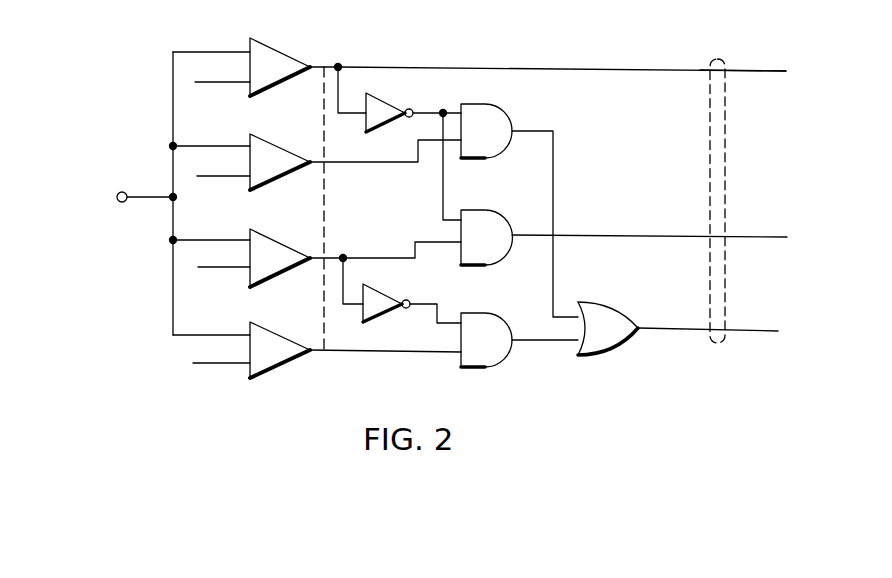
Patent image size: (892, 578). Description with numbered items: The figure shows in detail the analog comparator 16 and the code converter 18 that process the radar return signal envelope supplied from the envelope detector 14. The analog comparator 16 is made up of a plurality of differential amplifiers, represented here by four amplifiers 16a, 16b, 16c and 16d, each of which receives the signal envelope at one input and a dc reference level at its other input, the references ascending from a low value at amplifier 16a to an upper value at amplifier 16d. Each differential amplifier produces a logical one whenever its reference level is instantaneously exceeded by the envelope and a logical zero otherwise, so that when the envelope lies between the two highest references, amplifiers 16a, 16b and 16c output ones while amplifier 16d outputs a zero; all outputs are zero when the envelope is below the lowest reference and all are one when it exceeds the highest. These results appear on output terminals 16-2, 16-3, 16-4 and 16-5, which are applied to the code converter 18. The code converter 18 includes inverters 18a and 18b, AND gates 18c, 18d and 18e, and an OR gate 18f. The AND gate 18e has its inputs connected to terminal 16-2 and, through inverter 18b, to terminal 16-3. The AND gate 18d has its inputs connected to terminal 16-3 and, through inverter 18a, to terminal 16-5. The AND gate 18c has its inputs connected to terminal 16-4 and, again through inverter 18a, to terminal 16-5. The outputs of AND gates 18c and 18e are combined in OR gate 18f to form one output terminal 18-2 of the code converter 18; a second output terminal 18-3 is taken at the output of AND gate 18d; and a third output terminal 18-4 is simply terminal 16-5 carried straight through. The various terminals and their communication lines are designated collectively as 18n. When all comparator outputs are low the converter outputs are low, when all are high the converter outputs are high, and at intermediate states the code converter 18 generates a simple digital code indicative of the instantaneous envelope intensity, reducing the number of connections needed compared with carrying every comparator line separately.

The envelope detector 14 is at (104, 208).
The analog comparator 16 is at (203, 199).
The differential amplifier 16a is at (262, 329).
The differential amplifier 16b is at (262, 235).
The differential amplifier 16c is at (262, 140).
The differential amplifier 16d is at (265, 45).
The output terminal 16-2 is at (355, 352).
The output terminal 16-3 is at (333, 256).
The output terminal 16-4 is at (330, 164).
The output terminal 16-5 is at (340, 63).
The code converter 18 is at (565, 193).
The inverter 18a is at (387, 104).
The inverter 18b is at (385, 295).
The AND gate 18c is at (507, 111).
The AND gate 18d is at (480, 210).
The AND gate 18e is at (489, 313).
The OR gate 18f is at (607, 305).
The terminals and communication lines 18n is at (716, 59).
The output terminal 18-2 is at (758, 332).
The output terminal 18-3 is at (760, 238).
The output terminal 18-4 is at (760, 72).